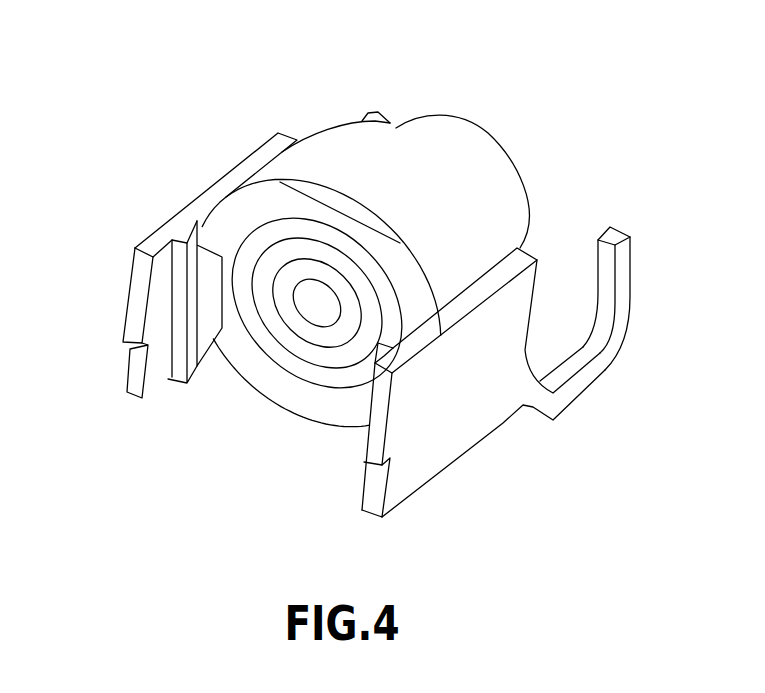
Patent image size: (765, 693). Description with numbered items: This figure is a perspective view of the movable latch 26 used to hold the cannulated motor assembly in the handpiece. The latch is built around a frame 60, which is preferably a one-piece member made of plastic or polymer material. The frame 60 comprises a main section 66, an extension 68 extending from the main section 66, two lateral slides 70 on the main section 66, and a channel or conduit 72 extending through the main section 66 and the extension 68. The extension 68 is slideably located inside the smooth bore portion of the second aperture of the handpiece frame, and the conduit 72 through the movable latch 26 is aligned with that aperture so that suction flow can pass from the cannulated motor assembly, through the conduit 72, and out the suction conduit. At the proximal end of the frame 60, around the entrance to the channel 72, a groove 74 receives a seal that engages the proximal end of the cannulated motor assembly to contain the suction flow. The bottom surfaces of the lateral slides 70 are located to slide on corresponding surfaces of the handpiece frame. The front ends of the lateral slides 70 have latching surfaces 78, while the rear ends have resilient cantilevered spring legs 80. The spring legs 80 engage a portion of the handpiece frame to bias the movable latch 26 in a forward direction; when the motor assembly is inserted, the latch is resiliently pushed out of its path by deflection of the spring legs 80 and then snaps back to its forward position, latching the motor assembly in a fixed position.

The movable latch 26 is at (158, 124).
The frame 60 is at (393, 173).
The main section 66 is at (350, 133).
The extension 68 is at (497, 155).
The lateral slides 70 is at (135, 290).
The channel 72 is at (318, 317).
The groove 74 is at (268, 360).
The latching surfaces 78 is at (132, 350).
The resilient cantilevered spring legs 80 is at (617, 325).